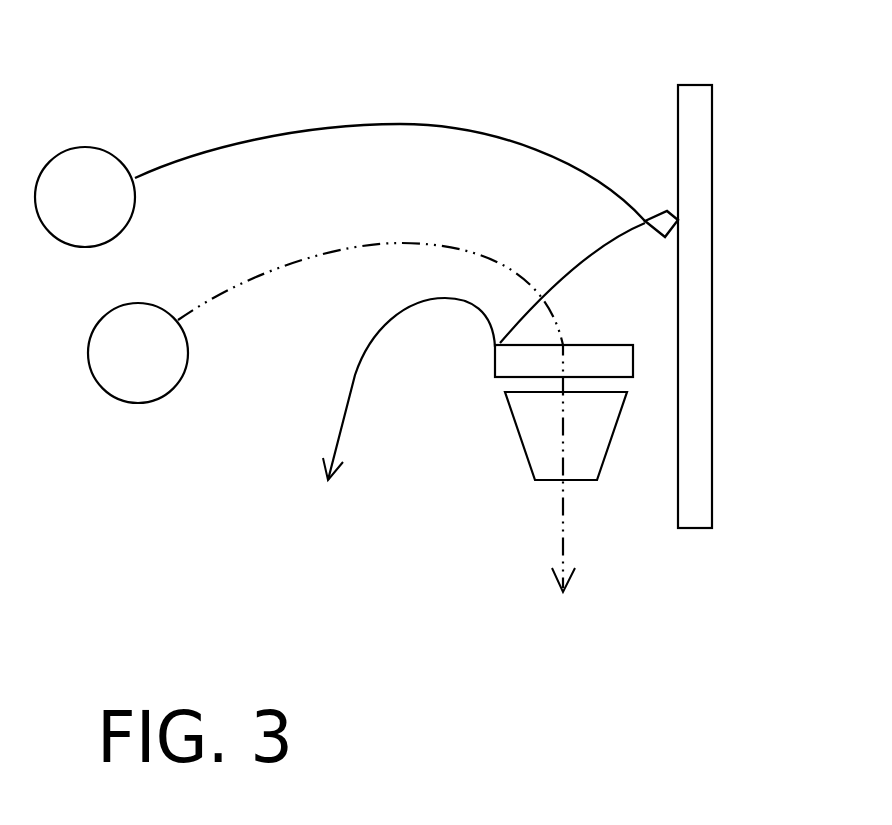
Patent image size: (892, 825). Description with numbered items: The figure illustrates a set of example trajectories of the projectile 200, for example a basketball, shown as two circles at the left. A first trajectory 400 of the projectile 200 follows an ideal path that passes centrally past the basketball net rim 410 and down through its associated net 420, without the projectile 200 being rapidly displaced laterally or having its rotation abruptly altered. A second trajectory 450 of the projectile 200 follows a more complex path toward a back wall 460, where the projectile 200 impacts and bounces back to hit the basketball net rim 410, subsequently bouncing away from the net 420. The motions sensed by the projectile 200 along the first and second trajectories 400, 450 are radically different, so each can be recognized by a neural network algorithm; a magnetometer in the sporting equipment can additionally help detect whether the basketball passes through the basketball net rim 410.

The projectile 200 is at (60, 212).
The first trajectory 400 is at (245, 283).
The basketball net rim 410 is at (495, 357).
The net 420 is at (527, 458).
The second trajectory 450 is at (225, 142).
The back wall 460 is at (690, 142).